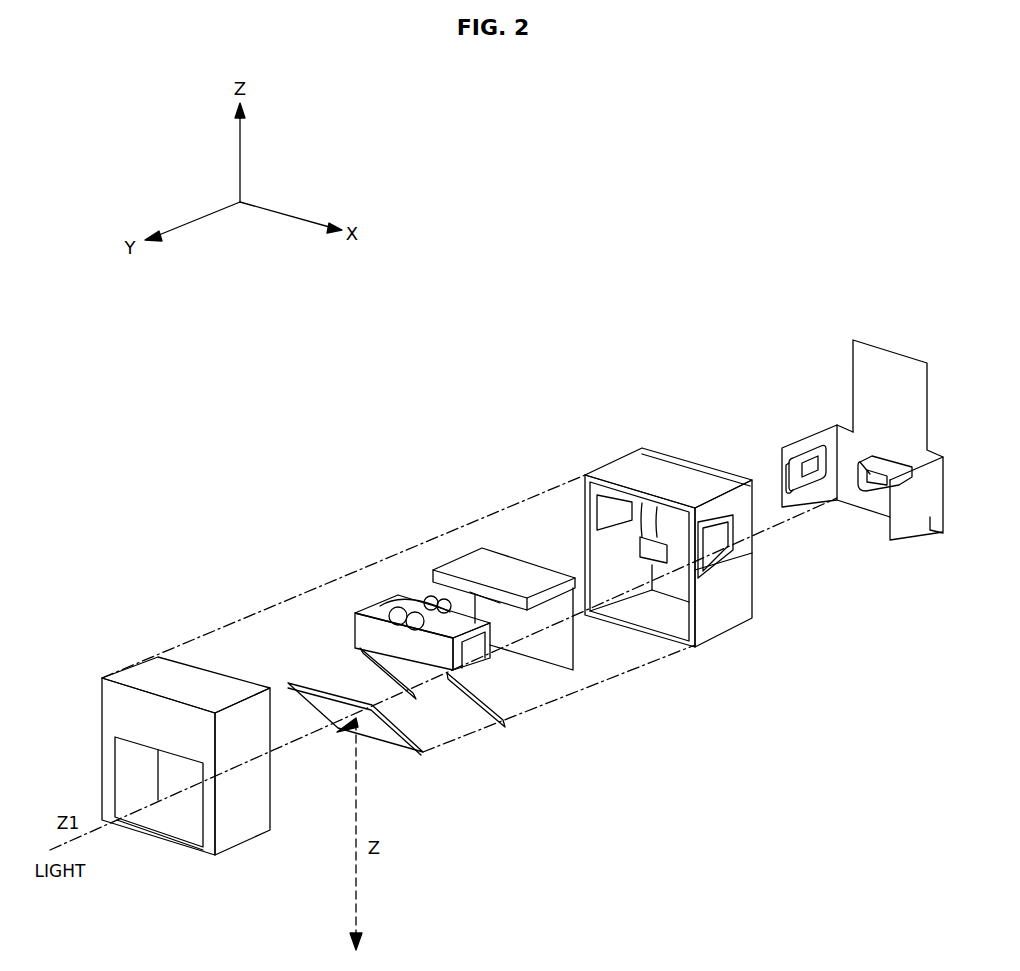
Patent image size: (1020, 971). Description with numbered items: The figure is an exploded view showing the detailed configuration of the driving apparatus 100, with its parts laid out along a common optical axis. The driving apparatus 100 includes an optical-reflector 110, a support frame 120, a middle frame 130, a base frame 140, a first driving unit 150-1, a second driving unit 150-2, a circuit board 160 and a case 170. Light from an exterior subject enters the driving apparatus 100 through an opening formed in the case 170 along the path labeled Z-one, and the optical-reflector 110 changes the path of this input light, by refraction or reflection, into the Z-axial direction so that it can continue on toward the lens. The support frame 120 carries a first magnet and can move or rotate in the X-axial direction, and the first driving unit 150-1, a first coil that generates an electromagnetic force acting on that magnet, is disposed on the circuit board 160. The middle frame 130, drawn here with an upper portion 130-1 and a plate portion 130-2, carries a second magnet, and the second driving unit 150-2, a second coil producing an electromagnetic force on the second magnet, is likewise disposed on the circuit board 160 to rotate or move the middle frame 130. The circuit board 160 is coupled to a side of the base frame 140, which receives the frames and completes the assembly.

The driving apparatus 100 is at (305, 380).
The optical-reflector 110 is at (303, 682).
The support frame 120 is at (360, 623).
The middle frame 130 is at (578, 660).
The holder upper cap 130-1 is at (567, 562).
The holder plate 130-2 is at (538, 640).
The base frame 140 is at (617, 472).
The first driving unit 150-1 is at (795, 445).
The second driving unit 150-2 is at (880, 493).
The circuit board 160 is at (882, 365).
The case 170 is at (176, 672).